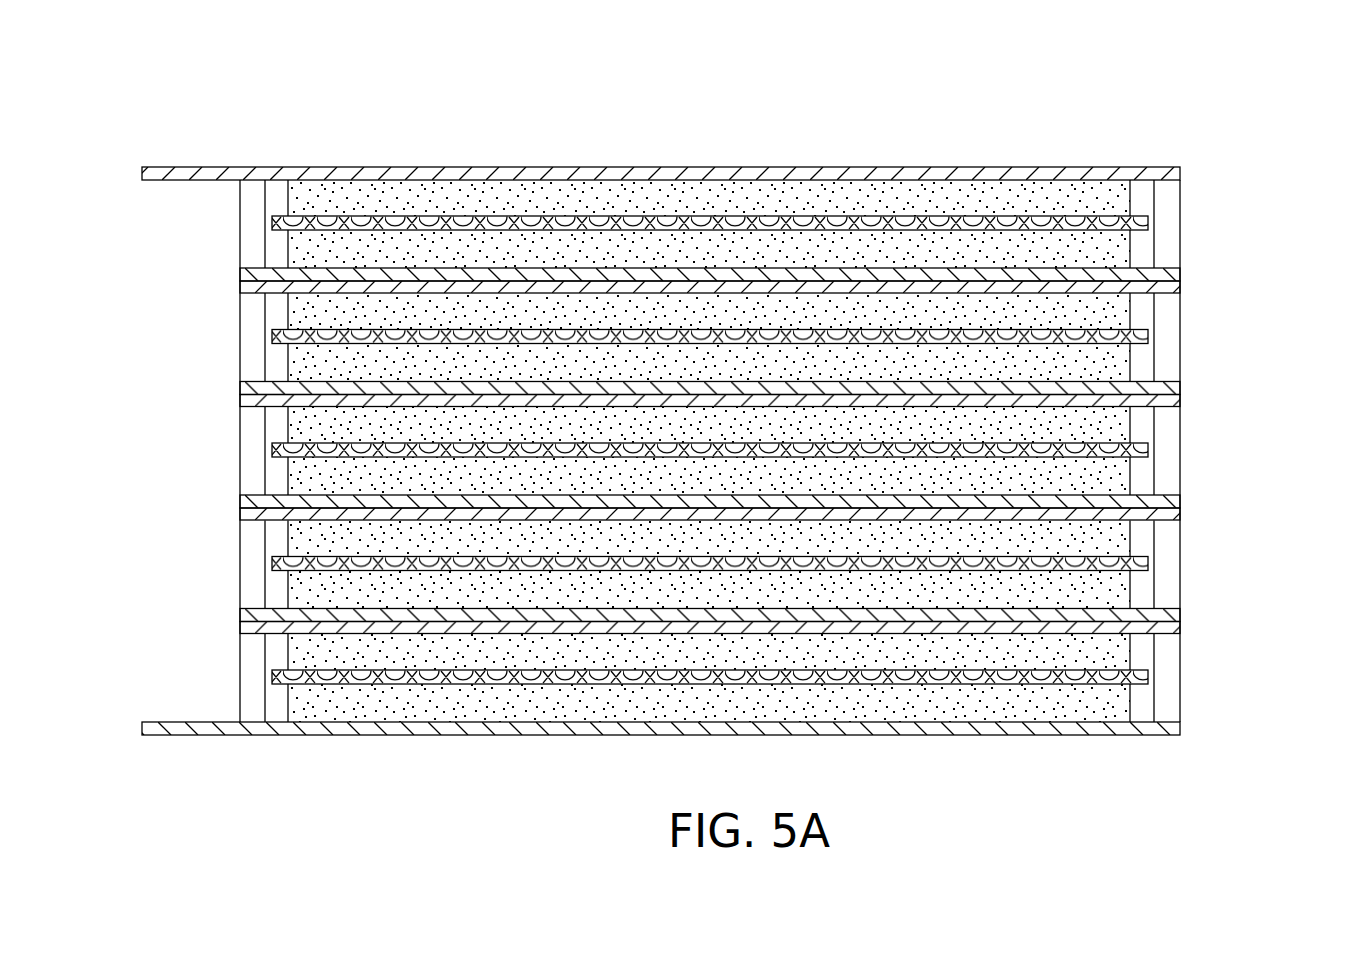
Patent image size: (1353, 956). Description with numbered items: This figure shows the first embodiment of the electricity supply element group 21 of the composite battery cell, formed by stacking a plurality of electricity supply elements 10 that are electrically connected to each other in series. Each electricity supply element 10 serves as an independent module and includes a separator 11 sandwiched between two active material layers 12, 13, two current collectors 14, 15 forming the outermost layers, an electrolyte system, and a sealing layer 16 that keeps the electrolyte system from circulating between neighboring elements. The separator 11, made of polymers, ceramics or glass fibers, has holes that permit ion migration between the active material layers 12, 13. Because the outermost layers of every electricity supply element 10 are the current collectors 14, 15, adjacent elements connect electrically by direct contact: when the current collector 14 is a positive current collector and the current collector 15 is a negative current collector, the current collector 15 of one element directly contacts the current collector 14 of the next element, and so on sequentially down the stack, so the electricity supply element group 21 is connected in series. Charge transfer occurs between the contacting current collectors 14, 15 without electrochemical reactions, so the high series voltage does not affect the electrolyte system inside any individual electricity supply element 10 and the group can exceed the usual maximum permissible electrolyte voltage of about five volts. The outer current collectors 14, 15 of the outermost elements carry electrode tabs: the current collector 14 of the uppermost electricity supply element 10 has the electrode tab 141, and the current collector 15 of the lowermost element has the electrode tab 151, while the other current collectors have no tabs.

The electricity supply element 10 is at (217, 672).
The separator 11 is at (268, 225).
The active material layer 12 is at (288, 200).
The active material layer 13 is at (288, 250).
The current collector 14 is at (1180, 175).
The current collector 15 is at (1180, 275).
The sealing layer 16 is at (240, 258).
The electricity supply element group 21 is at (243, 110).
The electrode tab 141 is at (170, 167).
The electrode tab 151 is at (180, 735).